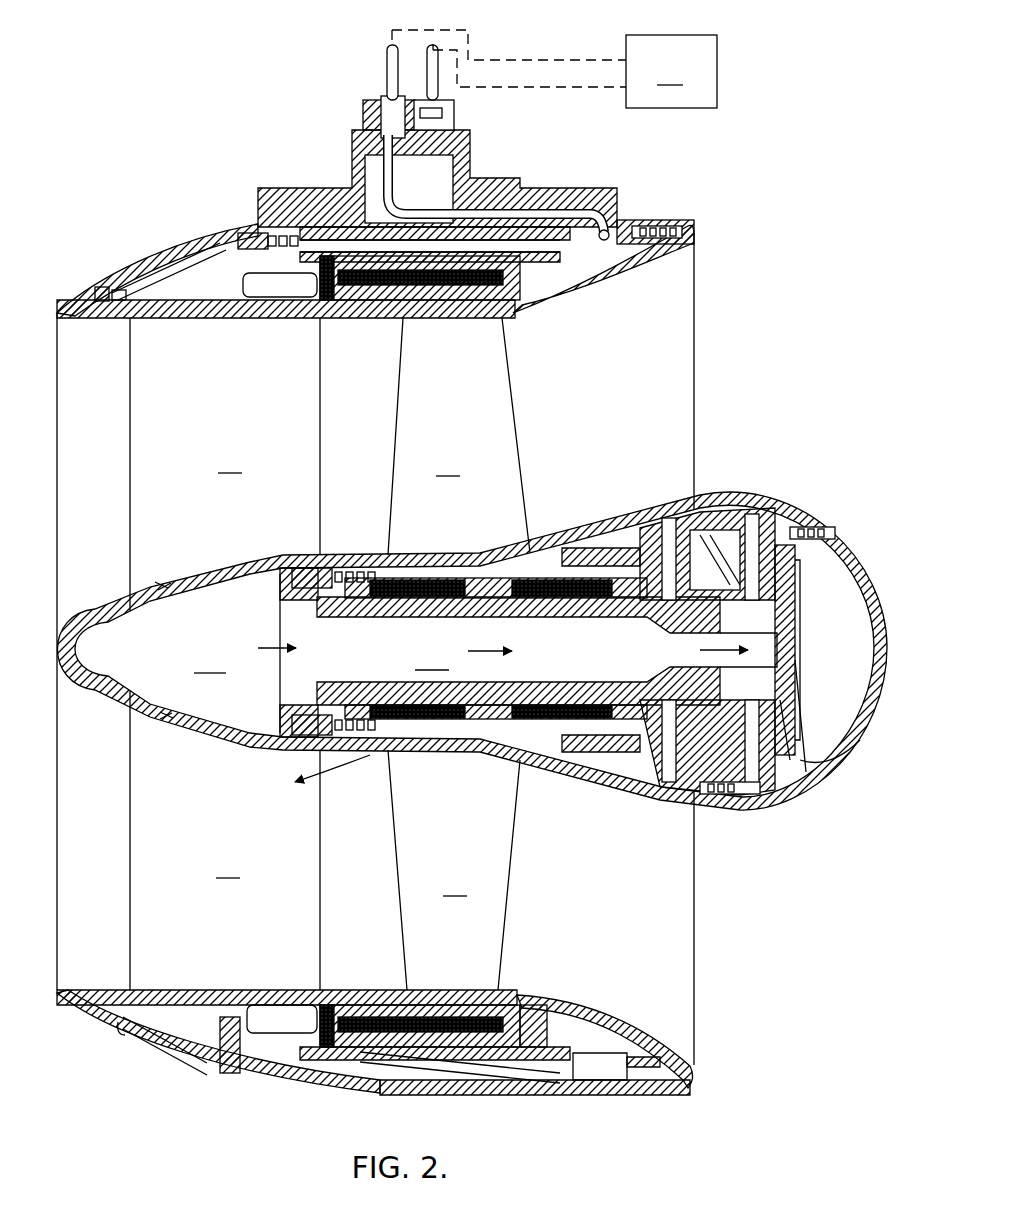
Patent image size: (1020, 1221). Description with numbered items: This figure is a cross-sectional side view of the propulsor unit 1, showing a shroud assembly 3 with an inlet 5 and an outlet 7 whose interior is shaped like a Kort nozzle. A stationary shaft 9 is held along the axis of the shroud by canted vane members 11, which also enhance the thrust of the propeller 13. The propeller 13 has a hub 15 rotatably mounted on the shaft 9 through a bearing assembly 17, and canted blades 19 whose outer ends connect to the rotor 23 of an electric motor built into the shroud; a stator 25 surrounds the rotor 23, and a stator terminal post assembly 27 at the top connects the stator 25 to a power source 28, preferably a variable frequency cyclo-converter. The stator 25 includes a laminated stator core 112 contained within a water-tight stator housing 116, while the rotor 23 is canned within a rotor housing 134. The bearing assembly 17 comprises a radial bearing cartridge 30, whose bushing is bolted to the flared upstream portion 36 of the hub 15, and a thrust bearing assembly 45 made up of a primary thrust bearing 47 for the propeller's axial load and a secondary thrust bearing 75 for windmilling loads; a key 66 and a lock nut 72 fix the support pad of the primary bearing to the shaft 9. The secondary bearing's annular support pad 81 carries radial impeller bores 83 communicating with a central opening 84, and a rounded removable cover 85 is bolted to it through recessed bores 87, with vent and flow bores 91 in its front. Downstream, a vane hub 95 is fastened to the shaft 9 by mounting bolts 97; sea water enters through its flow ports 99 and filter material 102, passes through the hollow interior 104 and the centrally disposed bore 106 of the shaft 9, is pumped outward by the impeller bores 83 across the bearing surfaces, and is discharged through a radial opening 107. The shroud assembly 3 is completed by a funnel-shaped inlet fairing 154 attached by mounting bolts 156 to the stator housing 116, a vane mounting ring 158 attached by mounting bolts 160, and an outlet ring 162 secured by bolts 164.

The propulsor unit 1 is at (150, 224).
The shroud assembly 3 is at (148, 246).
The inlet 5 is at (699, 316).
The outlet 7 is at (57, 333).
The stationary shaft 9 is at (406, 618).
The vane members 11 is at (229, 663).
The propeller 13 is at (511, 427).
The hub 15 is at (538, 761).
The bearing assembly 17 is at (606, 545).
The canted blades 19 is at (452, 674).
The rotor 23 is at (546, 1003).
The stator 25 is at (490, 1084).
The stator terminal post assembly 27 is at (362, 164).
The power source 28 is at (554, 69).
The radial bearing cartridge 30 is at (483, 562).
The flared upstream portion 36 is at (621, 791).
The thrust bearing assembly 45 is at (657, 514).
The primary thrust bearing 47 is at (669, 800).
The key 66 is at (692, 643).
The lock nut 72 is at (806, 702).
The secondary thrust bearing 75 is at (799, 526).
The annular support pad 81 is at (798, 602).
The impeller bores 83 is at (802, 670).
The central opening 84 is at (806, 642).
The removable cover 85 is at (878, 720).
The recessed bores 87 is at (746, 540).
The vent and flow bores 91 is at (829, 762).
The vane hub 95 is at (120, 601).
The mounting bolts 97 is at (307, 562).
The flow ports 99 is at (190, 585).
The filter material 102 is at (160, 590).
The hollow interior 104 is at (243, 653).
The centrally disposed bore 106 is at (462, 658).
The radial opening 107 is at (396, 757).
The stator core 112 is at (436, 222).
The stator housing 116 is at (554, 187).
The rotor housing 134 is at (343, 325).
The inlet fairing 154 is at (613, 300).
The mounting bolts 156 is at (681, 224).
The vane mounting ring 158 is at (197, 312).
The mounting bolts 160 is at (238, 238).
The outlet ring 162 is at (116, 302).
The bolts 164 is at (104, 287).